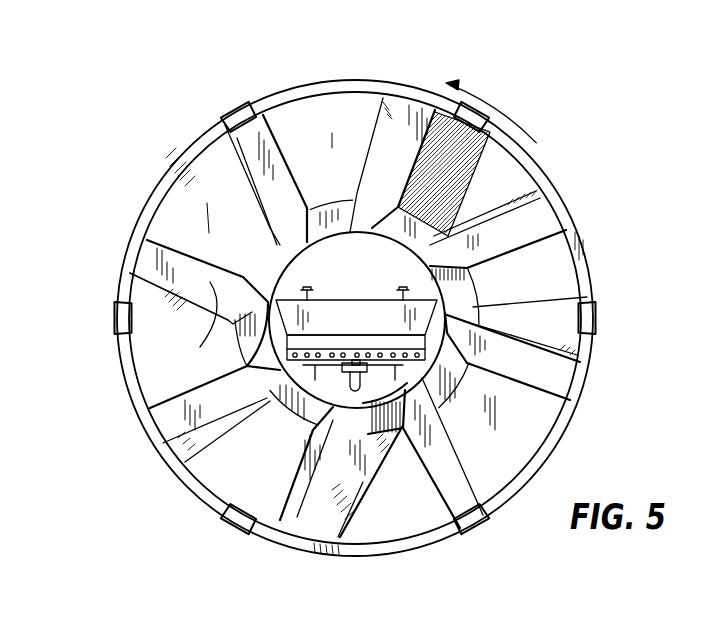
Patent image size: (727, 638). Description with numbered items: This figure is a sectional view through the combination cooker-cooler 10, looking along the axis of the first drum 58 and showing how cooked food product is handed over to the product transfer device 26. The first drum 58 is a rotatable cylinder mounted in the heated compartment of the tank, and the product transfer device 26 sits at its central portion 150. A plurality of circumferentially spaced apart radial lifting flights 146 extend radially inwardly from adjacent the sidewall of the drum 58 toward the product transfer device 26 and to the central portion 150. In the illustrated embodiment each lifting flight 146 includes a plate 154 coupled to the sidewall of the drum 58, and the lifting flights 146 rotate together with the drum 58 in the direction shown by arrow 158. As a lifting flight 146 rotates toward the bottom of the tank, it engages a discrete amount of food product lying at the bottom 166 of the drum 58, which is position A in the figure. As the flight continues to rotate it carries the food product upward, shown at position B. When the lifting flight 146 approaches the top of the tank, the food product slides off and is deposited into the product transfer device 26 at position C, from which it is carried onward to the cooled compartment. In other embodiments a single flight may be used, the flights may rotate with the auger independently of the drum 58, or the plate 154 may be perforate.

The combination cooker-cooler 10 is at (133, 124).
The product transfer device 26 is at (340, 322).
The first drum 58 is at (134, 216).
The radial lifting flights 146 is at (283, 138).
The central portion 150 is at (587, 297).
The plate 154 is at (522, 445).
The arrow 158 is at (470, 84).
The bottom of the drum 166 is at (399, 520).
The position A is at (288, 520).
The position B is at (167, 417).
The position C is at (243, 135).